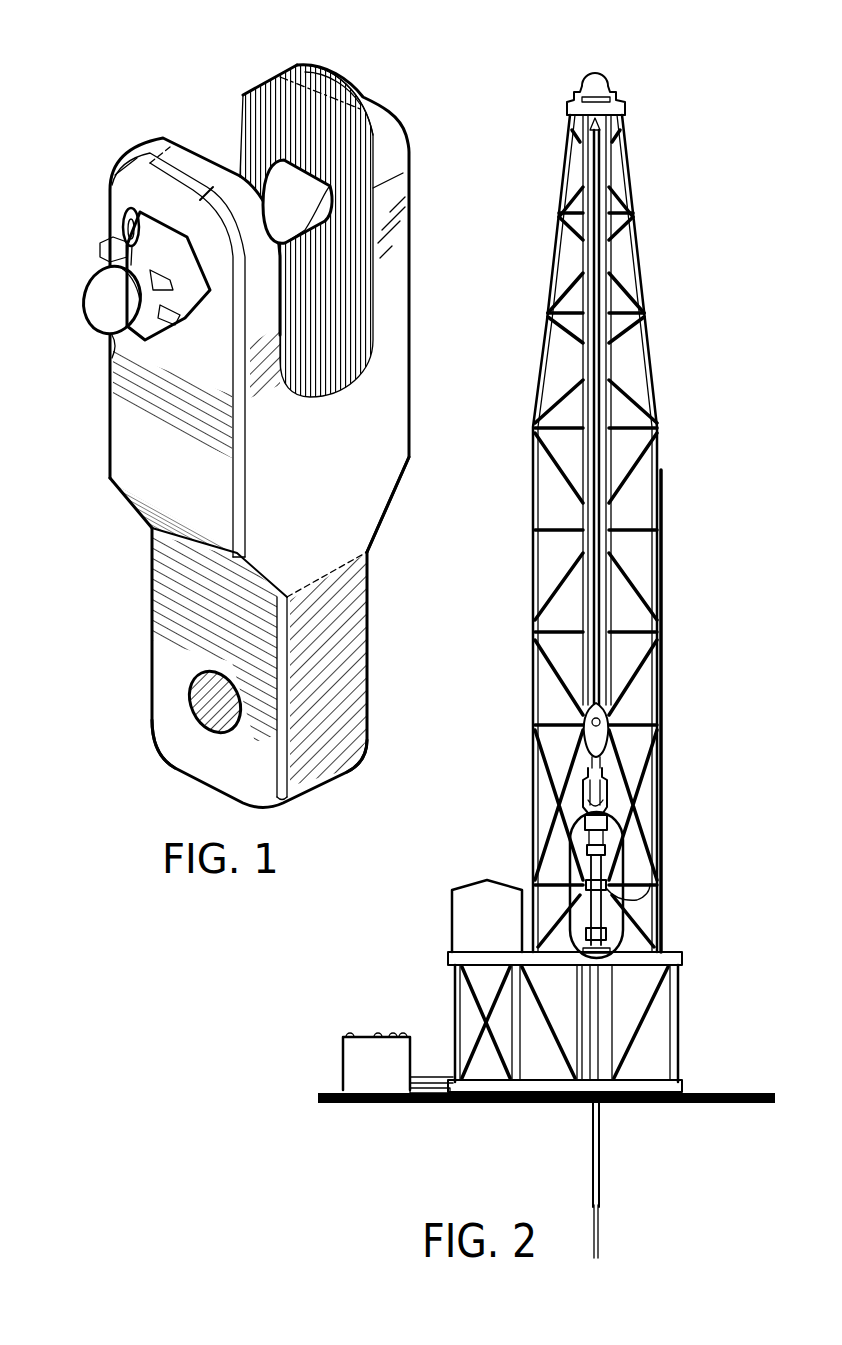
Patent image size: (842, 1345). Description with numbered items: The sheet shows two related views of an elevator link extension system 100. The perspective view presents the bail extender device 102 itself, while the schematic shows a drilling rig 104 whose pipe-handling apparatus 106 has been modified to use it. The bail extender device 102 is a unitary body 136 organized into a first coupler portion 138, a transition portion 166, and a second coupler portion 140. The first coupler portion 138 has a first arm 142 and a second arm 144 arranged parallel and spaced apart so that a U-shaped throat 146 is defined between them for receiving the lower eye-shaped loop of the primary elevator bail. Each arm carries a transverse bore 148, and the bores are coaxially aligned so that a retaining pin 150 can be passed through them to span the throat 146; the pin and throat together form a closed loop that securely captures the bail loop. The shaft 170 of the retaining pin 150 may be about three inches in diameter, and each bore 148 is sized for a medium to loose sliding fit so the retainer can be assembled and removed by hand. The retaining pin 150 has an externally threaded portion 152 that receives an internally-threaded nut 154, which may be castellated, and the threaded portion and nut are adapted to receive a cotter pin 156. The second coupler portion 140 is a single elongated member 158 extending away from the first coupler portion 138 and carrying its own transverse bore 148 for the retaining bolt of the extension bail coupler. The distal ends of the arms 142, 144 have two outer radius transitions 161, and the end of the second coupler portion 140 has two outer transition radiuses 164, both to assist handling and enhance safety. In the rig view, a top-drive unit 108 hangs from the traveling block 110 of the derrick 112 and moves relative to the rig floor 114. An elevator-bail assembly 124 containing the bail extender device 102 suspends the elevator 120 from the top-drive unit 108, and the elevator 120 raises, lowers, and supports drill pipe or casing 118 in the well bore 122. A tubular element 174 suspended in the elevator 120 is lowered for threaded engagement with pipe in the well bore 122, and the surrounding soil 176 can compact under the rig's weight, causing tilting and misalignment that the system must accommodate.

In FIG. 1, the elevator link extension system 100 is at (122, 69).
In FIG. 2, the elevator link extension system 100 is at (642, 806).
In FIG. 1, the bail extender device 102 is at (371, 66).
In FIG. 2, the bail extender device 102 is at (612, 893).
In FIG. 2, the drilling rig 104 is at (660, 45).
In FIG. 2, the pipe-handling apparatus 106 is at (603, 843).
In FIG. 2, the top-drive unit 108 is at (583, 813).
In FIG. 2, the traveling block 110 is at (602, 720).
In FIG. 2, the derrick 112 is at (644, 134).
In FIG. 2, the rig floor 114 is at (640, 945).
In FIG. 2, the drill pipe or casing 118 is at (600, 1047).
In FIG. 2, the elevator 120 is at (583, 932).
In FIG. 2, the well bore 122 is at (600, 1146).
In FIG. 2, the elevator-bail assembly 124 is at (623, 854).
In FIG. 1, the unitary body 136 is at (117, 539).
In FIG. 1, the first coupler portion 138 is at (414, 106).
In FIG. 1, the second coupler portion 140 is at (136, 758).
In FIG. 1, the first arm 142 is at (112, 134).
In FIG. 1, the second arm 144 is at (393, 86).
In FIG. 1, the U-shaped throat 146 is at (363, 353).
In FIG. 1, the transverse bore 148 is at (190, 688).
In FIG. 1, the retaining pin 150 is at (108, 318).
In FIG. 1, the externally threaded portion 152 is at (112, 358).
In FIG. 1, the nut 154 is at (103, 243).
In FIG. 1, the cotter pin 156 is at (125, 215).
In FIG. 1, the single elongated member 158 is at (350, 698).
In FIG. 1, the outer radius transitions 161 is at (120, 166).
In FIG. 1, the outer transition radiuses 164 is at (152, 712).
In FIG. 1, the transition portion 166 is at (412, 516).
In FIG. 1, the shaft 170 is at (290, 180).
In FIG. 2, the tubular element 174 is at (600, 1020).
In FIG. 2, the soil 176 is at (440, 1122).